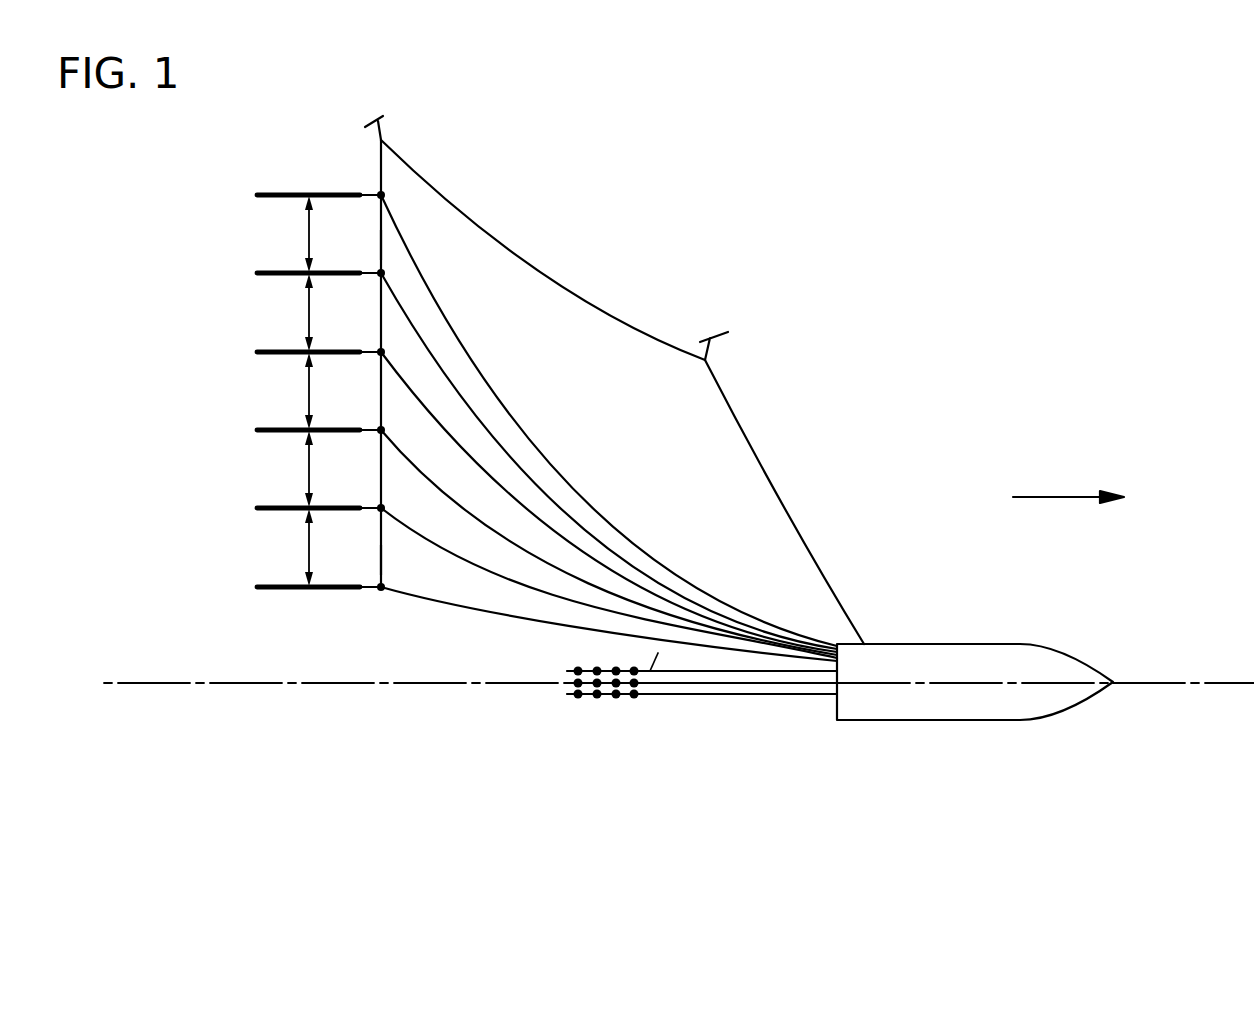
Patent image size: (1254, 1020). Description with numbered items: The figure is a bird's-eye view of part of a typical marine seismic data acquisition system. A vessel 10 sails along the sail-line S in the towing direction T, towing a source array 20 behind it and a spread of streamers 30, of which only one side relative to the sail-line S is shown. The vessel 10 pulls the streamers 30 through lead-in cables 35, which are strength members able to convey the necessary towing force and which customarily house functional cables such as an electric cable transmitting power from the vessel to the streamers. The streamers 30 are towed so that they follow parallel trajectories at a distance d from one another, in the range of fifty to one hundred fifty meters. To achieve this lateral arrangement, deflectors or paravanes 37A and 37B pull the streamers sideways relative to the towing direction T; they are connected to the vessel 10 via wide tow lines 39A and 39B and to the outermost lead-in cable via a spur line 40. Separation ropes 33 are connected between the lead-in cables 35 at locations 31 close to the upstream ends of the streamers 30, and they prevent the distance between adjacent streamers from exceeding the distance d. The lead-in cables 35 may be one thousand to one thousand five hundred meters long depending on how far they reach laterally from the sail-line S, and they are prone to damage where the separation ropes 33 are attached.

The vessel 10 is at (1013, 643).
The source array 20 is at (658, 695).
The streamers 30 is at (268, 193).
The locations 31 is at (384, 195).
The separation ropes 33 is at (382, 248).
The lead-in cables 35 is at (575, 495).
The deflector 37A is at (741, 335).
The deflector 37B is at (380, 118).
The wide tow line 39A is at (757, 457).
The wide tow line 39B is at (488, 232).
The spur line 40 is at (380, 173).
The distance d is at (319, 391).
The towing direction T is at (1068, 486).
The sail-line S is at (148, 683).